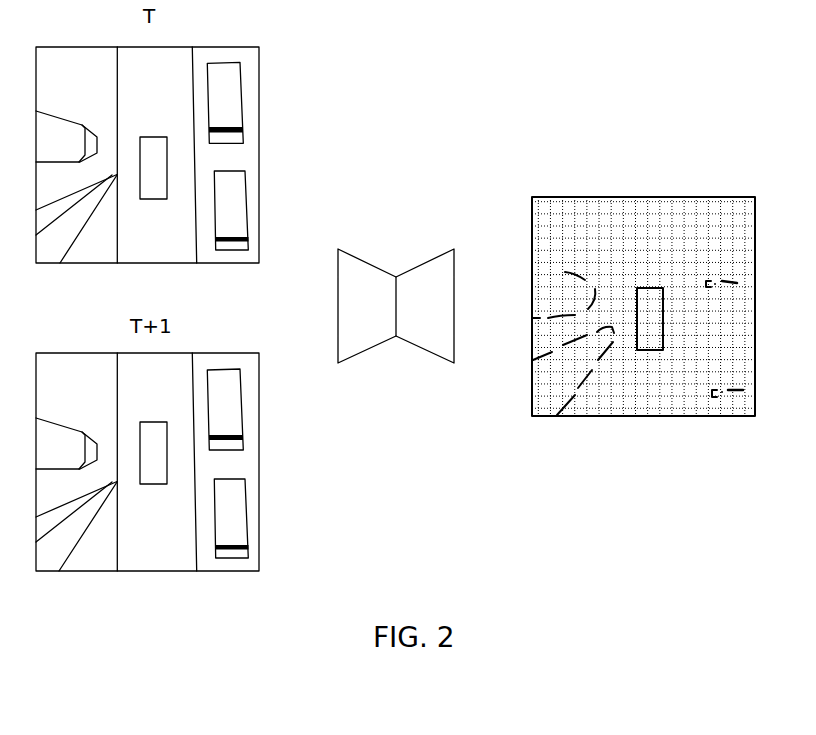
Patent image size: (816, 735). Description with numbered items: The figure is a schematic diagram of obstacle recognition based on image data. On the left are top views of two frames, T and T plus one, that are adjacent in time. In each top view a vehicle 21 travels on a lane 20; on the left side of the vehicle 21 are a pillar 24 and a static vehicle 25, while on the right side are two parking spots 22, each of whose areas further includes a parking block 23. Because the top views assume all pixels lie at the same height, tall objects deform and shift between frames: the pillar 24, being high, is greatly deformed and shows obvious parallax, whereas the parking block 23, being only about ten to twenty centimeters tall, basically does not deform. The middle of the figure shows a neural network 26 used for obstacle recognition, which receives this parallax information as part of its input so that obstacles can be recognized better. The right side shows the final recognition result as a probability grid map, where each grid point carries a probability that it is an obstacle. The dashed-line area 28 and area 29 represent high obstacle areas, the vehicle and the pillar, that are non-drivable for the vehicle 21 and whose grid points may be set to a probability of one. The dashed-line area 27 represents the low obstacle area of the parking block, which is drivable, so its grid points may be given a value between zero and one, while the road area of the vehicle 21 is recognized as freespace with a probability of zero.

The lane 20 is at (117, 84).
The vehicle 21 is at (153, 199).
The parking spot 22 is at (243, 98).
The parking block 23 is at (242, 129).
The pillar 24 is at (78, 231).
The static vehicle 25 is at (52, 163).
The neural network 26 is at (425, 350).
The area 27 is at (730, 283).
The area 28 is at (574, 397).
The area 29 is at (553, 269).